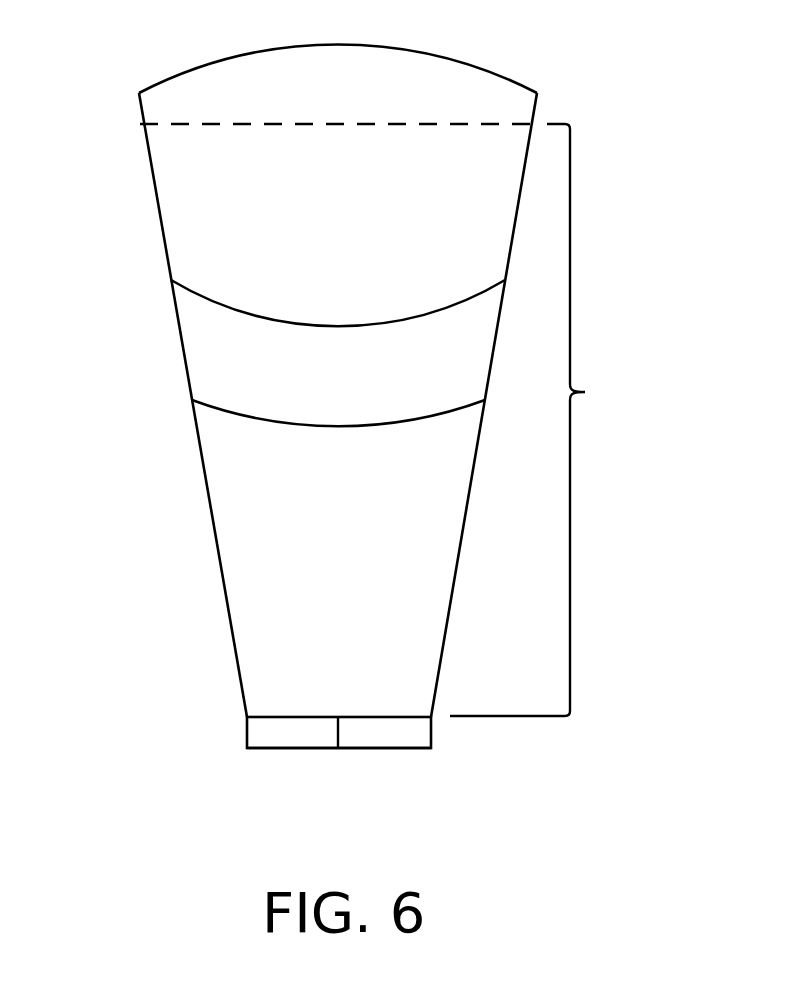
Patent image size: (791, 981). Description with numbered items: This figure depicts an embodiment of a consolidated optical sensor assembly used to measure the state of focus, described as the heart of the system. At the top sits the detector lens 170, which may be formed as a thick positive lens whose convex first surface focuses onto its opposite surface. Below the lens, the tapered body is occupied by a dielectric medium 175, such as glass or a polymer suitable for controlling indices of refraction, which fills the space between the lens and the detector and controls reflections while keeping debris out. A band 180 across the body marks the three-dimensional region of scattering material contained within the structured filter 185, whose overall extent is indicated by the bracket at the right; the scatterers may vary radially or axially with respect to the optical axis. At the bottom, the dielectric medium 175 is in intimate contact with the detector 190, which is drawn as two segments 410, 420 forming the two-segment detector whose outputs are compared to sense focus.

The detector lens 170 is at (157, 108).
The dielectric medium 175 is at (188, 214).
The intermediate band 180 is at (230, 362).
The structured filter 185 is at (542, 420).
The detector 190 is at (247, 733).
The left base section 410 is at (300, 742).
The right base section 420 is at (375, 742).